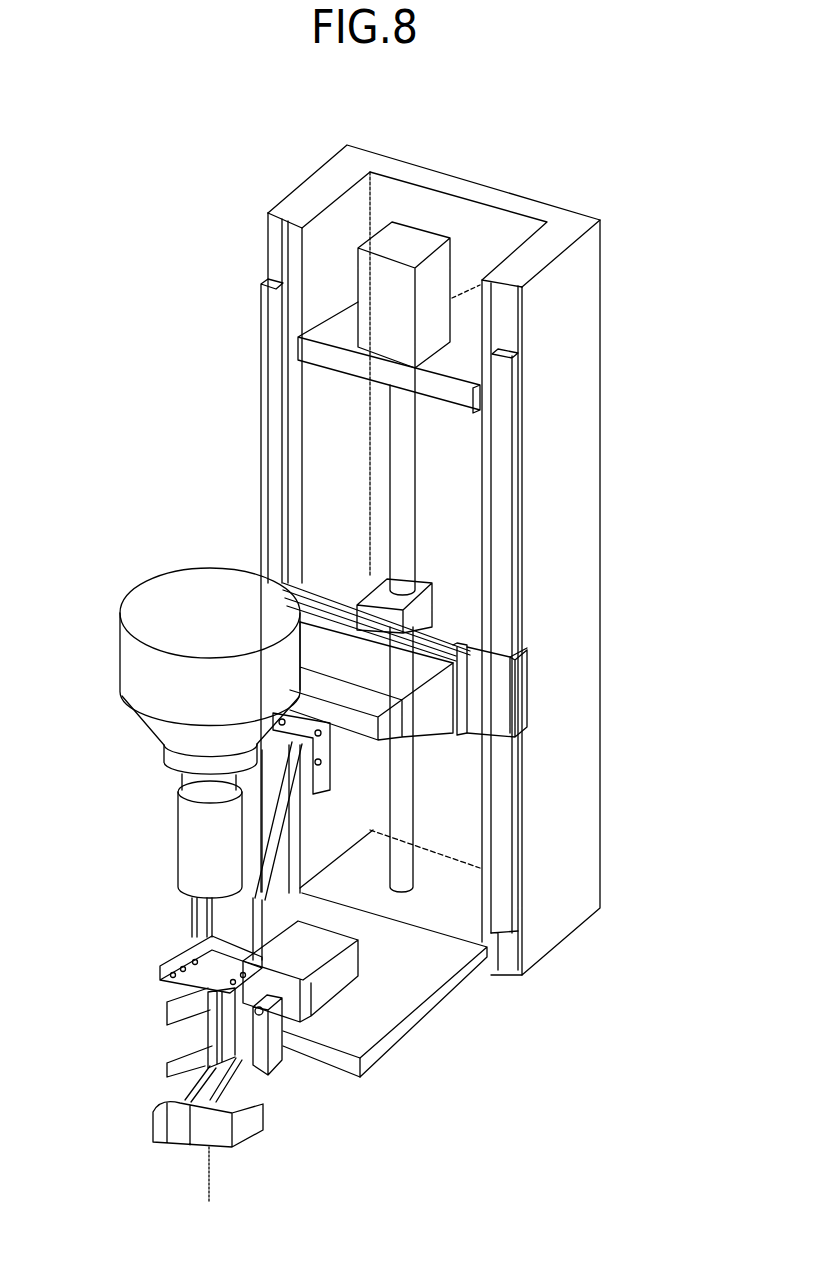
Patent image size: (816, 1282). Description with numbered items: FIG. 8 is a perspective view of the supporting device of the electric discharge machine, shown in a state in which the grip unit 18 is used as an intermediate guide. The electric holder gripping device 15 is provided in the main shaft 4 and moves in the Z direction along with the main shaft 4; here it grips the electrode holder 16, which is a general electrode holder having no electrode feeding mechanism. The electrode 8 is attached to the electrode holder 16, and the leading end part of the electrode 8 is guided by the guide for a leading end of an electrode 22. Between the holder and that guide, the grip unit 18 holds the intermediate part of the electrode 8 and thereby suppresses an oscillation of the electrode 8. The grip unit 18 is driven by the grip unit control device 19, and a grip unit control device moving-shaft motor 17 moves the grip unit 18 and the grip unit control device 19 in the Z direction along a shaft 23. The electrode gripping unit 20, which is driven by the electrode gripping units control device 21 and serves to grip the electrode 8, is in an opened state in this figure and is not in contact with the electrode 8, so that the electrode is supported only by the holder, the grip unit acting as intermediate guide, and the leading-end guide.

The main shaft 4 is at (585, 313).
The electrode 8 is at (210, 1181).
The electric holder gripping device 15 is at (132, 664).
The electrode holder 16 is at (188, 856).
The grip unit control device moving-shaft motor 17 is at (410, 237).
The grip unit 18 is at (178, 950).
The grip unit control device 19 is at (393, 722).
The electrode gripping unit 20 is at (192, 1084).
The electrode gripping units control device 21 is at (335, 972).
The guide for a leading end of an electrode 22 is at (212, 1147).
The shaft 23 is at (405, 467).